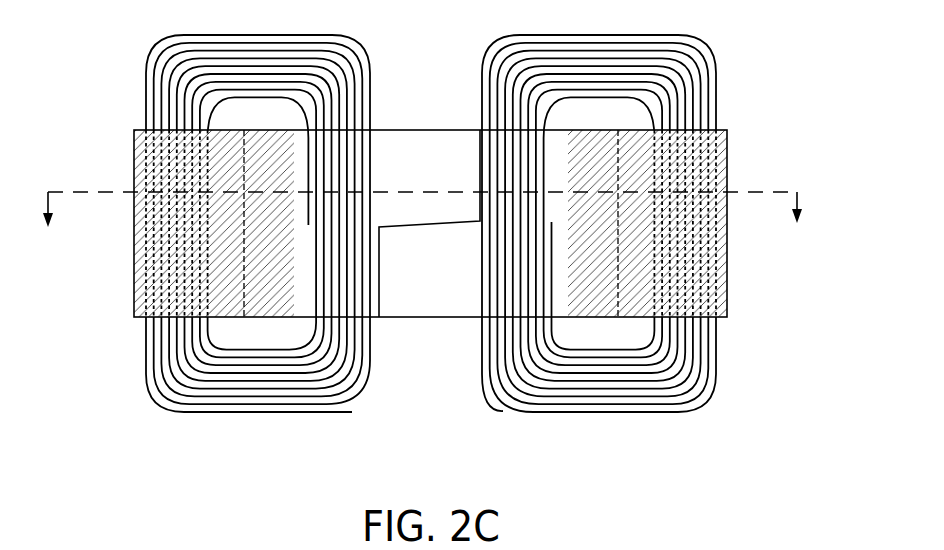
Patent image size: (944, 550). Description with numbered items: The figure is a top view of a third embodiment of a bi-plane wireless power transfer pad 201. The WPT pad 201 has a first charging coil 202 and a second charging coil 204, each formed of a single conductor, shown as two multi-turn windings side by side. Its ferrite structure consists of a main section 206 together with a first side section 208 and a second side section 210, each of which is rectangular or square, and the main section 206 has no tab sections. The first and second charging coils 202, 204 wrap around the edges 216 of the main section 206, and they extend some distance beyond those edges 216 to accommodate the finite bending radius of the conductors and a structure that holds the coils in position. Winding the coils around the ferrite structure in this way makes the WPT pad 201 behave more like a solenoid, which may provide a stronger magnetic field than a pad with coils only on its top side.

The bi-plane wireless power transfer pad 201 is at (111, 28).
The first charging coil 202 is at (352, 412).
The second charging coil 204 is at (503, 411).
The main section 206 is at (418, 318).
The first side section 208 is at (133, 270).
The second side section 210 is at (732, 285).
The edges 216 is at (425, 118).